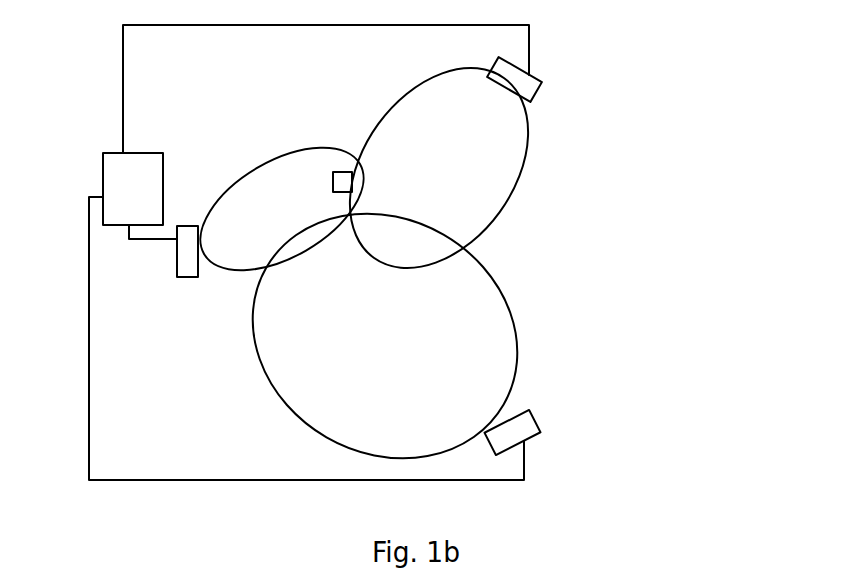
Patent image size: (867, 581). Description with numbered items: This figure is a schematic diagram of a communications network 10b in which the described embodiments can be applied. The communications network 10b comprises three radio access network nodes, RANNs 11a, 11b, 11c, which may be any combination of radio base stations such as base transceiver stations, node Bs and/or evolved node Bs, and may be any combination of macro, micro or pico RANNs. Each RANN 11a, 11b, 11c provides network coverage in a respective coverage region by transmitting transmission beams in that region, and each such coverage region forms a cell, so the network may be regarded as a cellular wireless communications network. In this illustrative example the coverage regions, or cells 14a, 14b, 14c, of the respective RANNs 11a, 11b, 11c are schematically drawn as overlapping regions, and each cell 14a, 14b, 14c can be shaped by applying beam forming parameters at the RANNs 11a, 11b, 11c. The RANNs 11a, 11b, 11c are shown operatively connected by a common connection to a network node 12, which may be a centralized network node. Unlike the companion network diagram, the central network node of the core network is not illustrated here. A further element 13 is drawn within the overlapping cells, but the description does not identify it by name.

The communications network 10b is at (653, 149).
The network node 12 is at (103, 183).
The radio access network node 11a is at (177, 252).
The radio access network node 11b is at (546, 78).
The radio access network node 11c is at (539, 430).
The receiver / coupled device 13 is at (338, 158).
The cell 14a is at (234, 198).
The cell 14b is at (494, 210).
The cell 14c is at (360, 449).